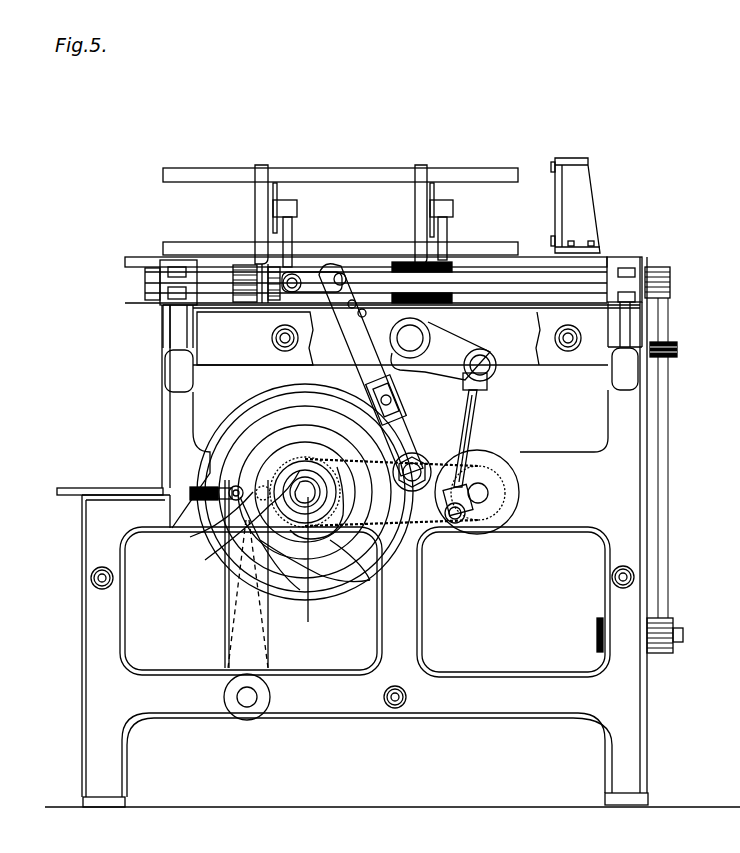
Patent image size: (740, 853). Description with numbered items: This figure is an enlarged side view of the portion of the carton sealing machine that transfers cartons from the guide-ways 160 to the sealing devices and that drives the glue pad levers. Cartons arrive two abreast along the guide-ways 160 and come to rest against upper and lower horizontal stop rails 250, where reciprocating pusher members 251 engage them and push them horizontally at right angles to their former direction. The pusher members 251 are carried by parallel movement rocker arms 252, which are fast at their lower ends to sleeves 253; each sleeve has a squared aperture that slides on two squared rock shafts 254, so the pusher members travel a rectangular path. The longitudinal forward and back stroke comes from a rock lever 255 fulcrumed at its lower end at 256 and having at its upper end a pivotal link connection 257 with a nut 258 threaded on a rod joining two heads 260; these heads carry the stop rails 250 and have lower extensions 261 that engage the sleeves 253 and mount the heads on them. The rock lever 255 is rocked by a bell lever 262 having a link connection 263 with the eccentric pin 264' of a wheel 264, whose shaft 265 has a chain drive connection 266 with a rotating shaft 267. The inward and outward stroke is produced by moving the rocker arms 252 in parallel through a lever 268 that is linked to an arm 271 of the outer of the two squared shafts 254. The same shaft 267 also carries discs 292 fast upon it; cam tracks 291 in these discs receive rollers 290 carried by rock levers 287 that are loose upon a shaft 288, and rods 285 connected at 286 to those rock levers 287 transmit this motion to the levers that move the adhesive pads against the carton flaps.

The guide-ways 160 is at (555, 158).
The stop rails 250 is at (480, 242).
The pusher members 251 is at (277, 183).
The rocker arms 252 is at (291, 236).
The sleeves 253 is at (455, 302).
The squared rock shafts 254 is at (522, 280).
The rock lever 255 is at (357, 340).
The fulcrum 256 is at (410, 480).
The pivotal link connection 257 is at (315, 280).
The nut 258 is at (290, 295).
The heads 260 is at (258, 168).
The lower extensions 261 is at (250, 266).
The bell lever 262 is at (408, 372).
The link connection 263 is at (478, 410).
The wheel 264 is at (498, 492).
The eccentric pin 264' is at (485, 528).
The shaft 265 is at (489, 493).
The chain drive connection 266 is at (420, 524).
The shaft 267 is at (316, 573).
The lever 268 is at (666, 421).
The arm 271 is at (666, 320).
The rods 285 is at (90, 487).
The connection 286 is at (242, 500).
The rock levers 287 is at (228, 586).
The shaft 288 is at (258, 697).
The rollers 290 is at (262, 488).
The cam tracks 291 is at (265, 590).
The discs 292 is at (252, 415).